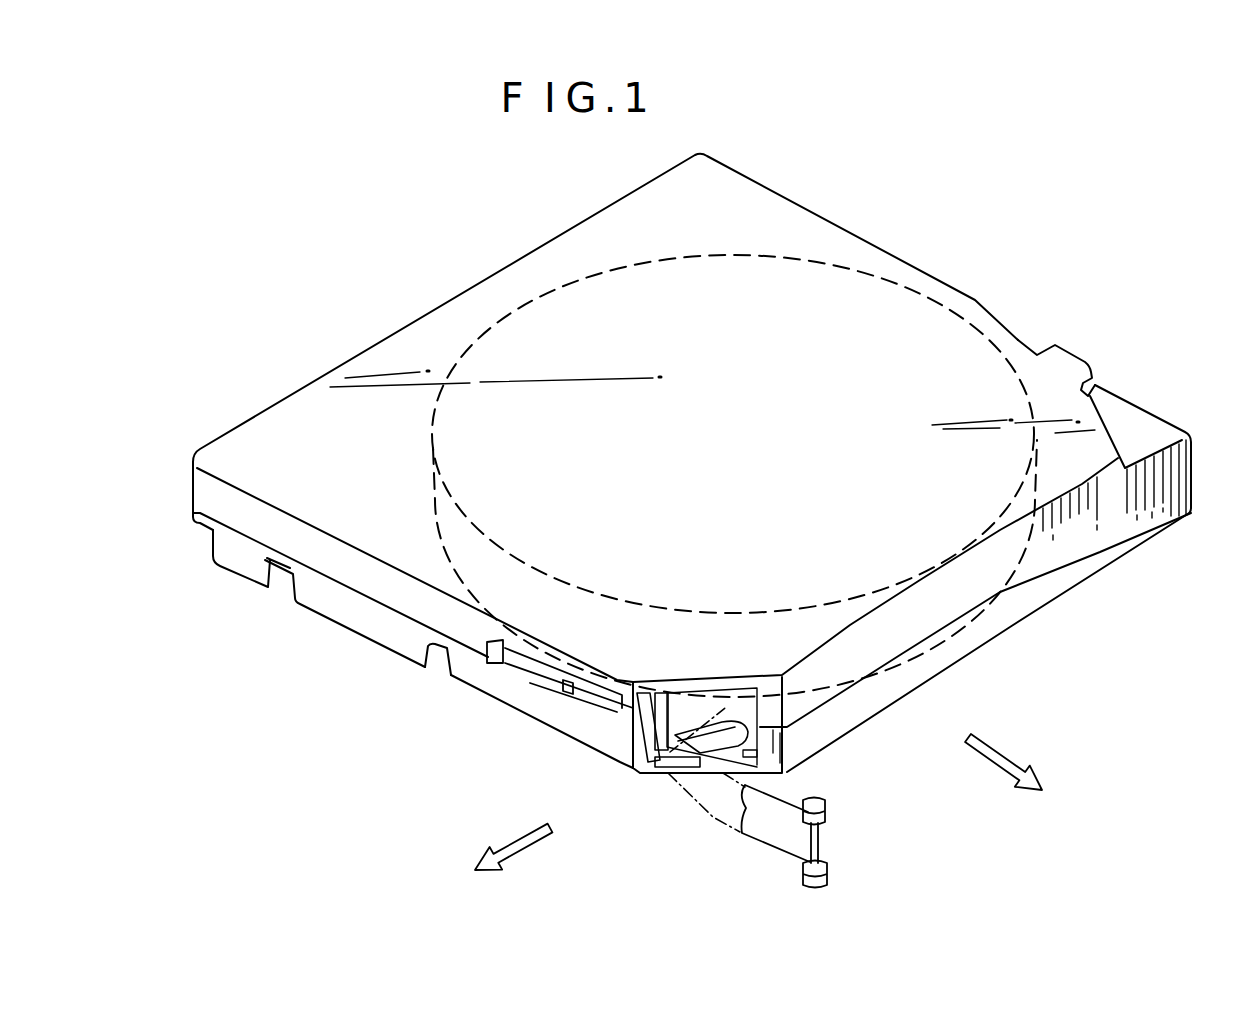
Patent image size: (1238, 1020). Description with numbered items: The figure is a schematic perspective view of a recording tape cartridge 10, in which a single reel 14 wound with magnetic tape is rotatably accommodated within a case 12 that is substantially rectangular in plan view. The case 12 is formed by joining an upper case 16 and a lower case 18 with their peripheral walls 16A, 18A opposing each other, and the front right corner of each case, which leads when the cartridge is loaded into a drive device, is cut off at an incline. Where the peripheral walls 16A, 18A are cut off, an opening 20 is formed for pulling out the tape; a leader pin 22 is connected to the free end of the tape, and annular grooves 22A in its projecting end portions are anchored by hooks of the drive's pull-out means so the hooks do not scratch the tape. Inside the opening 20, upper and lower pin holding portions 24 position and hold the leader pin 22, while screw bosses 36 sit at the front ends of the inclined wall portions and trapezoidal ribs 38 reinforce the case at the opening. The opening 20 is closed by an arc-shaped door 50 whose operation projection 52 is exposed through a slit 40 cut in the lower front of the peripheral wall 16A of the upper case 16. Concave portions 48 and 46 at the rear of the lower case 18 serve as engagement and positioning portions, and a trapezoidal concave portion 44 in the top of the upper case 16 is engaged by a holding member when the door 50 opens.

The recording tape cartridge 10 is at (983, 116).
The case 12 is at (728, 208).
The reel 14 is at (566, 305).
The upper case 16 is at (1050, 538).
The peripheral wall of upper case 16A is at (193, 482).
The lower case 18 is at (1027, 603).
The peripheral wall of lower case 18A is at (340, 612).
The opening 20 is at (647, 774).
The leader pin 22 is at (826, 798).
The annular groove 22A is at (826, 828).
The pin holding portion 24 is at (747, 733).
The screw boss 36 is at (632, 745).
The rib 38 is at (658, 777).
The slit 40 is at (555, 700).
The concave portion 44 is at (1020, 340).
The concave portion 46 is at (286, 590).
The concave portion 48 is at (437, 667).
The door 50 is at (540, 667).
The operation projection 52 is at (503, 665).